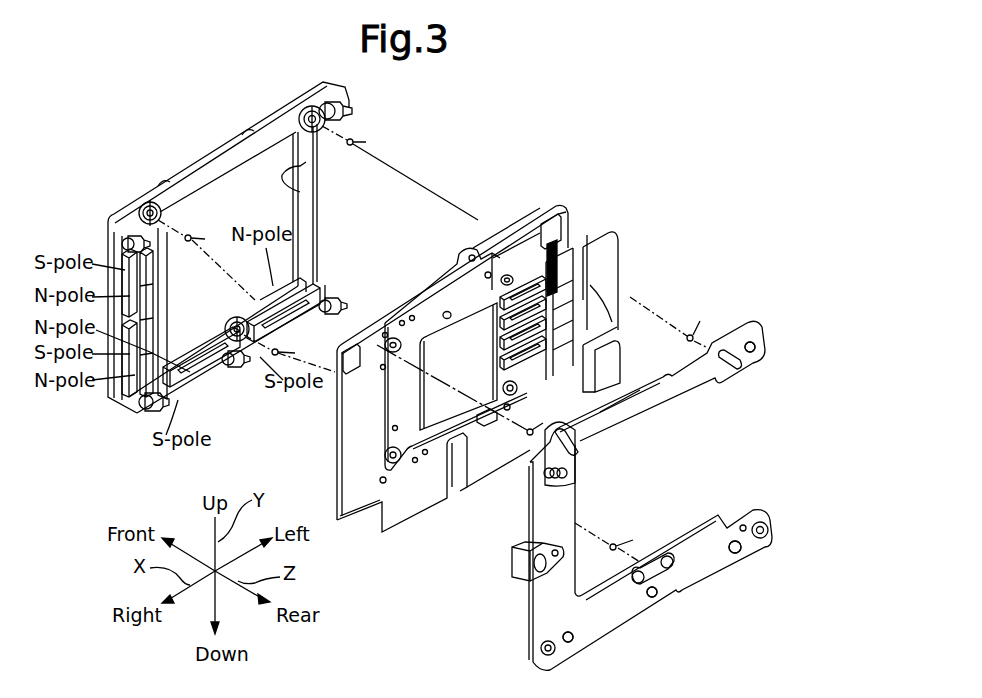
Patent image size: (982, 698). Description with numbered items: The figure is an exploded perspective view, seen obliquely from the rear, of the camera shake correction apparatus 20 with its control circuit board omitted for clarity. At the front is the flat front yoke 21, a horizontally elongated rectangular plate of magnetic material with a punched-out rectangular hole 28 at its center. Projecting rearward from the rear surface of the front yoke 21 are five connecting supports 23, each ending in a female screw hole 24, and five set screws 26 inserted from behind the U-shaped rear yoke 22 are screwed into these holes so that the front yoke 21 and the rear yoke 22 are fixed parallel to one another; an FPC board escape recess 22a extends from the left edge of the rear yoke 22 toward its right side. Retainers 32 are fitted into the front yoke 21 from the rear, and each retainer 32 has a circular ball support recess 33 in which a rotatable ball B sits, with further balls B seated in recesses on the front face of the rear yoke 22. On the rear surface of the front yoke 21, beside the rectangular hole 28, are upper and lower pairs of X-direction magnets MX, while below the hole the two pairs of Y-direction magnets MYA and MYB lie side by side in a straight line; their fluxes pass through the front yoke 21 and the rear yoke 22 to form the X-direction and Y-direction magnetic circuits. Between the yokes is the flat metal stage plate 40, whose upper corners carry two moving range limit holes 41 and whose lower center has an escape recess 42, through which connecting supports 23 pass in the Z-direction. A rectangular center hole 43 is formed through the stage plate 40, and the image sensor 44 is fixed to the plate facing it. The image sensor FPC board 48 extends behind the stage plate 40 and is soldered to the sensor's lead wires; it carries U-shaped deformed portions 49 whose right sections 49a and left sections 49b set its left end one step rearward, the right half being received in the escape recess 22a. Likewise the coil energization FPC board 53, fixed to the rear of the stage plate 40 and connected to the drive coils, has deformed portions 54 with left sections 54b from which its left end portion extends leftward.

The camera shake correction apparatus 20 is at (729, 198).
The front yoke 21 is at (210, 165).
The rear yoke 22 is at (660, 398).
The FPC board escape recess 22a is at (618, 408).
The connecting supports 23 is at (124, 242).
The female screw hole 24 is at (130, 238).
The set screws 26 is at (752, 352).
The rectangular hole 28 is at (300, 192).
The retainer 32 is at (150, 202).
The ball support recess 33 is at (162, 214).
The stage plate 40 is at (524, 212).
The moving range limit holes 41 is at (340, 402).
The escape recess 42 is at (456, 452).
The rectangular center hole 43 is at (463, 303).
The image sensor 44 is at (338, 458).
The image sensor FPC board 48 is at (445, 342).
The deformed portions 49 is at (553, 318).
The right sections 49a is at (540, 263).
The left sections 49b is at (533, 247).
The coil energization FPC board 53 is at (410, 513).
The deformed portions 54 is at (580, 357).
The left sections 54b is at (578, 423).
The balls B is at (435, 344).
The X-direction magnets MX is at (157, 320).
The Y-direction magnets MYA is at (200, 386).
The Y-direction magnets MYB is at (322, 286).